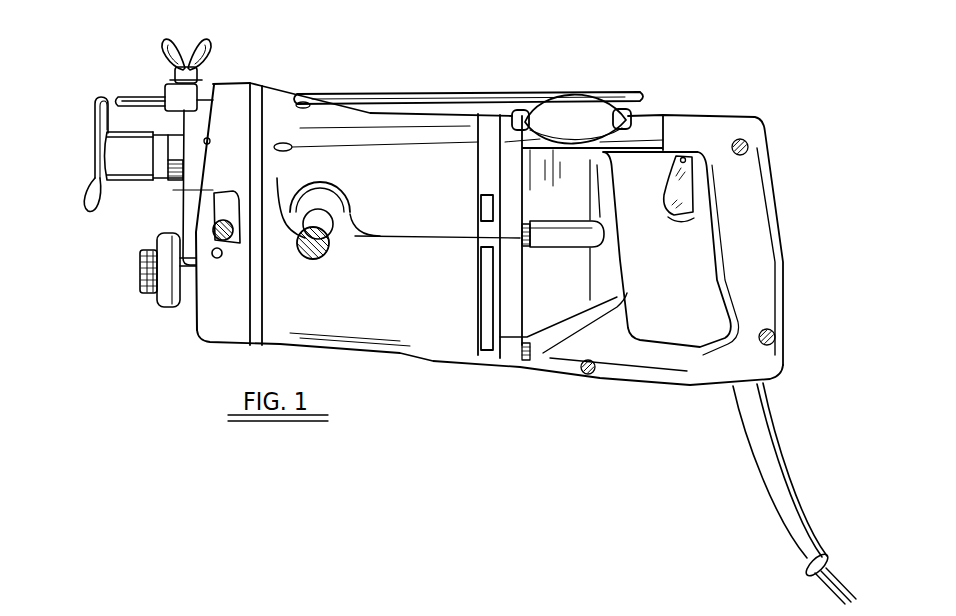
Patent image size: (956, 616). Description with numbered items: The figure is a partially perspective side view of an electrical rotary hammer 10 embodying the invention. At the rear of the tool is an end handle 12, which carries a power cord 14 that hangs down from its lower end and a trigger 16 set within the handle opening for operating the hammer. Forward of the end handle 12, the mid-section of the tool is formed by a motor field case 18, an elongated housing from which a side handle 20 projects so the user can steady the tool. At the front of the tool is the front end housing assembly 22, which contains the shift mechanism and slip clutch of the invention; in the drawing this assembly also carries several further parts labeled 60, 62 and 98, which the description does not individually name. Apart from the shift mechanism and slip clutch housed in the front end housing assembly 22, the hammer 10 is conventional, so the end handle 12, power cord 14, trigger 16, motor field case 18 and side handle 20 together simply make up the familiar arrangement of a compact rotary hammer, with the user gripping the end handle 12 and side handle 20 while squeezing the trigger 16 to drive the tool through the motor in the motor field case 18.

The electrical rotary hammer 10 is at (449, 370).
The end handle 12 is at (753, 253).
The power cord 14 is at (749, 423).
The trigger 16 is at (682, 188).
The motor field case 18 is at (398, 320).
The side handle 20 is at (322, 221).
The front end housing assembly 22 is at (196, 332).
The depth gauge bracket 60 is at (97, 97).
The indicator 62 is at (213, 260).
The locking lever 98 is at (225, 212).